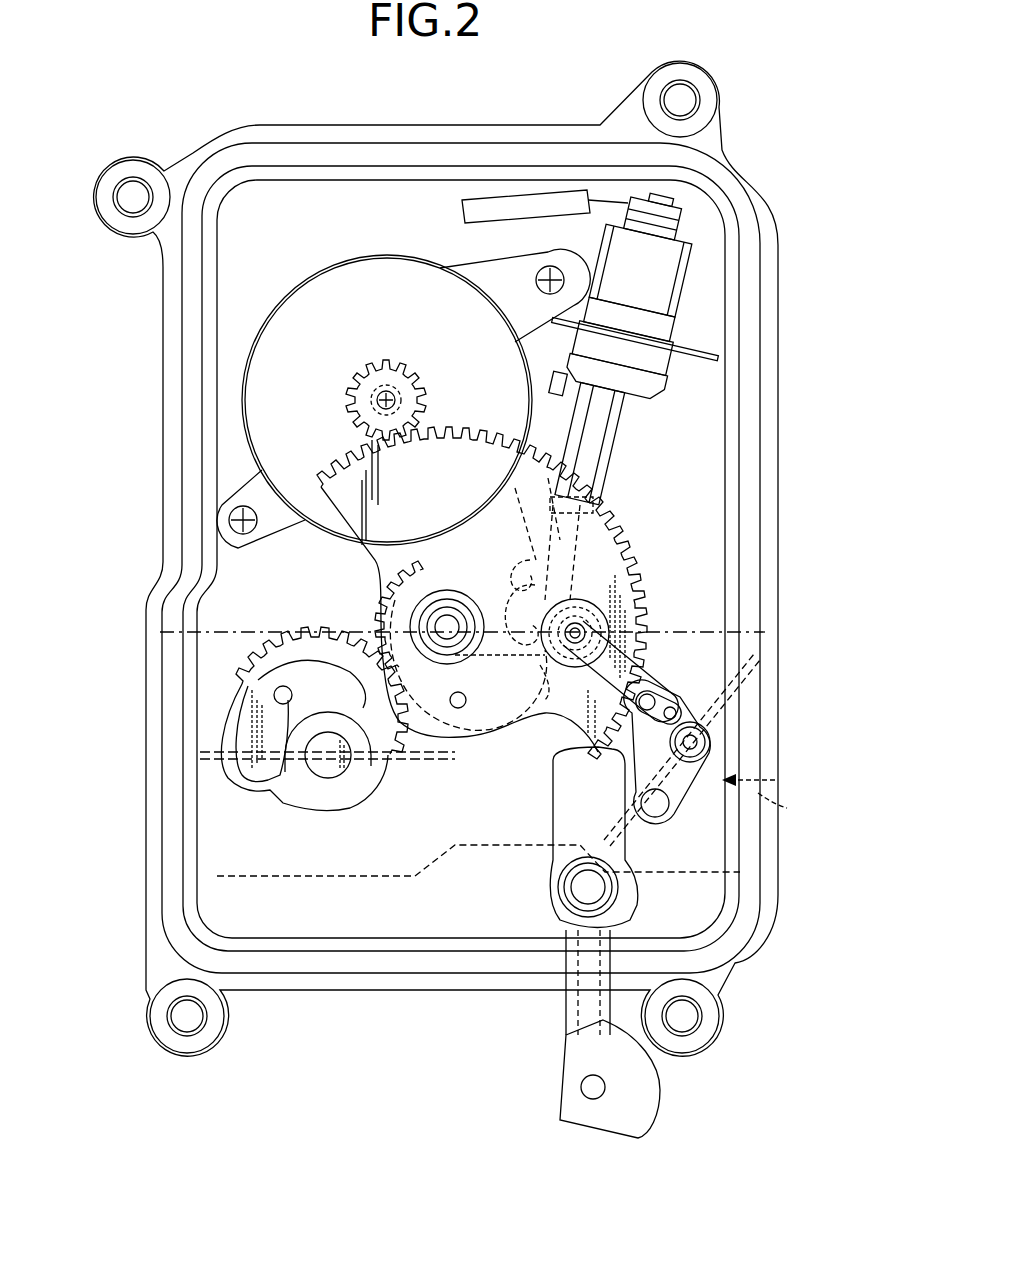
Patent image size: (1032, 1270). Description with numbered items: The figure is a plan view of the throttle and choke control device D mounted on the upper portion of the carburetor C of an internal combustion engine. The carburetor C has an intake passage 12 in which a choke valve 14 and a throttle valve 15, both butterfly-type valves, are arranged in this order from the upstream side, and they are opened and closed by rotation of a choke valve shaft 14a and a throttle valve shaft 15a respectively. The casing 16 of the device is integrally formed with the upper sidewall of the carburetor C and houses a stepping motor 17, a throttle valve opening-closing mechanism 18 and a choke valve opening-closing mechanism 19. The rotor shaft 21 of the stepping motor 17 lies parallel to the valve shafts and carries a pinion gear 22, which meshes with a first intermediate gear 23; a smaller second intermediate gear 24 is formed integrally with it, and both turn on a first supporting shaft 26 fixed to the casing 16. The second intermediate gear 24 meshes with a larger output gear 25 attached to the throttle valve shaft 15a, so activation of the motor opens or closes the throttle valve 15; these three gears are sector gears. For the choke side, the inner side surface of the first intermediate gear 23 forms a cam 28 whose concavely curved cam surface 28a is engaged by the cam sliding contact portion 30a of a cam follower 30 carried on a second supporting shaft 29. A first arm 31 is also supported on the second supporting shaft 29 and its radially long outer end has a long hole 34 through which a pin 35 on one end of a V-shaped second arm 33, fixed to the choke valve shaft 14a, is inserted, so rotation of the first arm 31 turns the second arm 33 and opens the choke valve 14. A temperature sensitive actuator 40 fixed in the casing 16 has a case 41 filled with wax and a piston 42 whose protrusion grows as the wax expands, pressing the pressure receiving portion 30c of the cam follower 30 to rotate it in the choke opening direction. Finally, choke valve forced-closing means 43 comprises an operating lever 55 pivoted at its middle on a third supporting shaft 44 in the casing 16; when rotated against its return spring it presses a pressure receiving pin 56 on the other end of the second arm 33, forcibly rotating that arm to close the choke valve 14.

The throttle and choke control device D is at (372, 122).
The carburetor C is at (748, 633).
The intake passage 12 is at (700, 642).
The choke valve 14 is at (633, 830).
The choke valve shaft 14a is at (708, 745).
The throttle valve 15 is at (412, 765).
The throttle valve shaft 15a is at (326, 775).
The casing 16 is at (270, 253).
The stepping motor 17 is at (384, 272).
The throttle valve opening-closing mechanism 18 is at (370, 596).
The choke valve opening-closing mechanism 19 is at (755, 818).
The rotor shaft 21 is at (386, 395).
The pinion gear 22 is at (413, 385).
The first intermediate gear 23 is at (485, 430).
The second intermediate gear 24 is at (374, 625).
The output gear 25 is at (266, 648).
The first supporting shaft 26 is at (448, 592).
The cam 28 is at (496, 714).
The cam surface 28a is at (538, 509).
The second supporting shaft 29 is at (578, 600).
The cam follower 30 is at (538, 615).
The cam sliding contact portion 30a is at (520, 548).
The pressure receiving portion 30c is at (502, 671).
The first arm 31 is at (640, 600).
The second arm 33 is at (634, 770).
The long hole 34 is at (678, 712).
The pin 35 is at (650, 694).
The temperature sensitive actuator 40 is at (590, 253).
The case 41 is at (657, 280).
The piston 42 is at (595, 445).
The choke valve forced-closing means 43 is at (560, 1016).
The third supporting shaft 44 is at (620, 890).
The operating lever 55 is at (560, 827).
The pressure receiving pin 56 is at (668, 808).